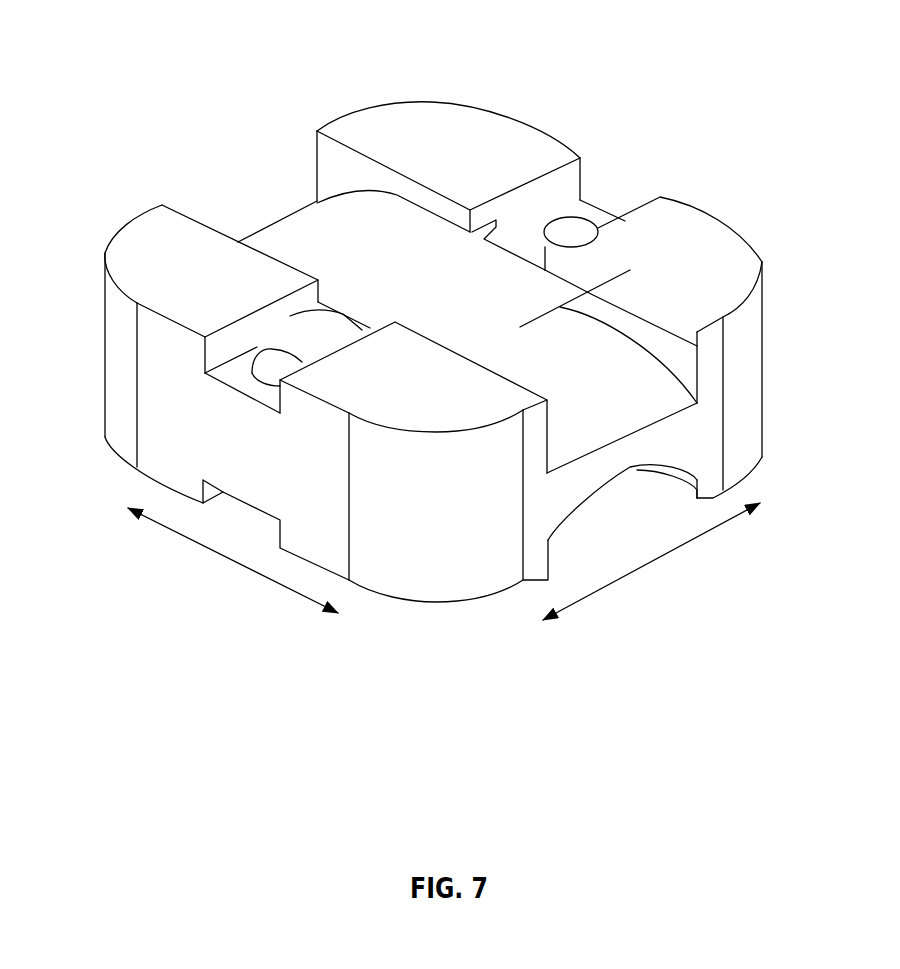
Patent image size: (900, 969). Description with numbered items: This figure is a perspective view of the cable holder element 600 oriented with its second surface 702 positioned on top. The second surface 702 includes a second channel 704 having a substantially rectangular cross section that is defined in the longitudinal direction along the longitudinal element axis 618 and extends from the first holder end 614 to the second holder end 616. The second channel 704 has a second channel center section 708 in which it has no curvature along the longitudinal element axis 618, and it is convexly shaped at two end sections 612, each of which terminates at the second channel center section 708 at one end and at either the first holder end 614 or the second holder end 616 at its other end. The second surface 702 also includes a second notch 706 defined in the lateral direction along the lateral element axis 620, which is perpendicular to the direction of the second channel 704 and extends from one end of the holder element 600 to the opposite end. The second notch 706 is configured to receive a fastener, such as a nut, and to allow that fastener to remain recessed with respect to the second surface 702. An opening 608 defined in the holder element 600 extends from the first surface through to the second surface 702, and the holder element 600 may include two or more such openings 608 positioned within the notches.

The cable holder element 600 is at (490, 346).
The opening 608 is at (555, 233).
The end sections 612 is at (585, 378).
The first holder end 614 is at (623, 453).
The second holder end 616 is at (267, 227).
The longitudinal element axis 618 is at (197, 545).
The lateral element axis 620 is at (667, 560).
The second surface 702 is at (682, 275).
The second channel 704 is at (522, 290).
The second notch 706 is at (583, 212).
The second channel center section 708 is at (453, 298).